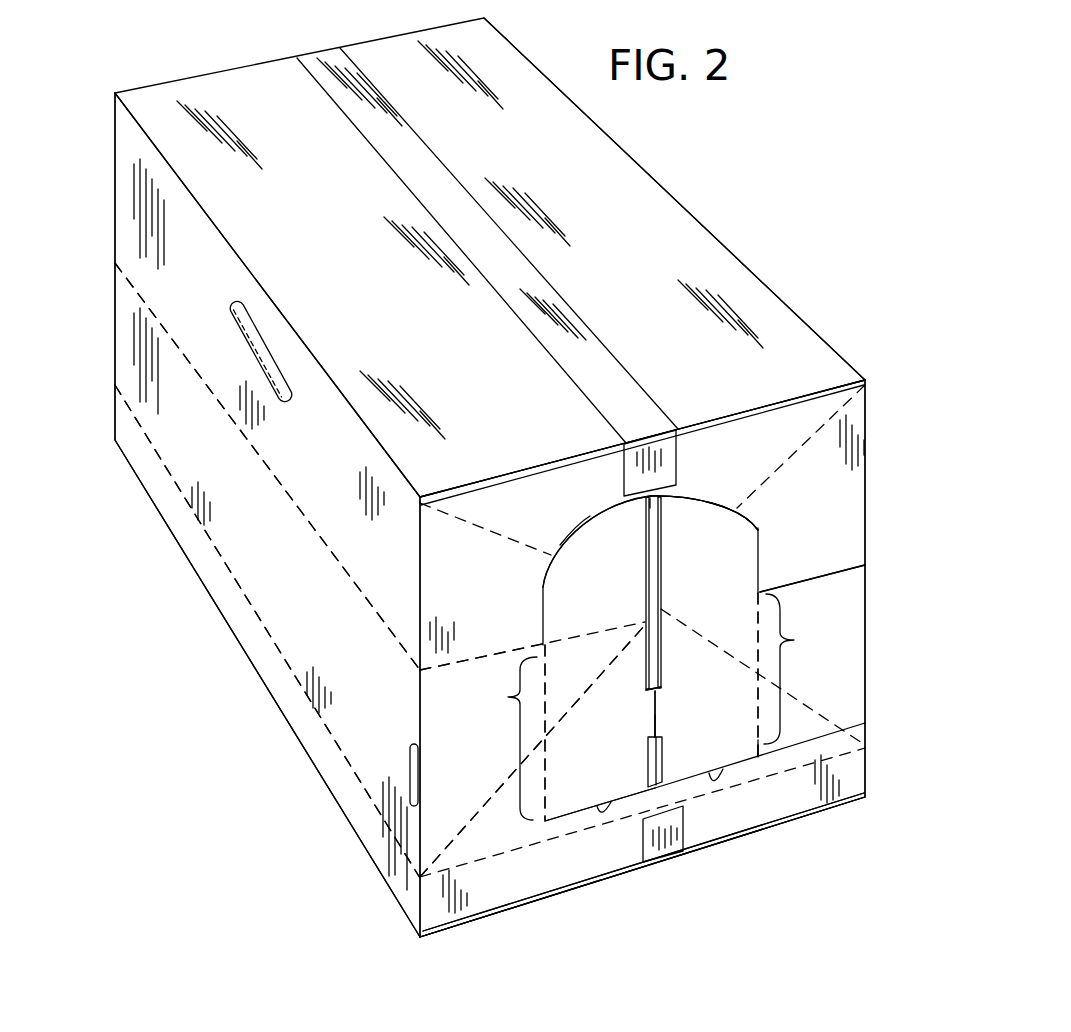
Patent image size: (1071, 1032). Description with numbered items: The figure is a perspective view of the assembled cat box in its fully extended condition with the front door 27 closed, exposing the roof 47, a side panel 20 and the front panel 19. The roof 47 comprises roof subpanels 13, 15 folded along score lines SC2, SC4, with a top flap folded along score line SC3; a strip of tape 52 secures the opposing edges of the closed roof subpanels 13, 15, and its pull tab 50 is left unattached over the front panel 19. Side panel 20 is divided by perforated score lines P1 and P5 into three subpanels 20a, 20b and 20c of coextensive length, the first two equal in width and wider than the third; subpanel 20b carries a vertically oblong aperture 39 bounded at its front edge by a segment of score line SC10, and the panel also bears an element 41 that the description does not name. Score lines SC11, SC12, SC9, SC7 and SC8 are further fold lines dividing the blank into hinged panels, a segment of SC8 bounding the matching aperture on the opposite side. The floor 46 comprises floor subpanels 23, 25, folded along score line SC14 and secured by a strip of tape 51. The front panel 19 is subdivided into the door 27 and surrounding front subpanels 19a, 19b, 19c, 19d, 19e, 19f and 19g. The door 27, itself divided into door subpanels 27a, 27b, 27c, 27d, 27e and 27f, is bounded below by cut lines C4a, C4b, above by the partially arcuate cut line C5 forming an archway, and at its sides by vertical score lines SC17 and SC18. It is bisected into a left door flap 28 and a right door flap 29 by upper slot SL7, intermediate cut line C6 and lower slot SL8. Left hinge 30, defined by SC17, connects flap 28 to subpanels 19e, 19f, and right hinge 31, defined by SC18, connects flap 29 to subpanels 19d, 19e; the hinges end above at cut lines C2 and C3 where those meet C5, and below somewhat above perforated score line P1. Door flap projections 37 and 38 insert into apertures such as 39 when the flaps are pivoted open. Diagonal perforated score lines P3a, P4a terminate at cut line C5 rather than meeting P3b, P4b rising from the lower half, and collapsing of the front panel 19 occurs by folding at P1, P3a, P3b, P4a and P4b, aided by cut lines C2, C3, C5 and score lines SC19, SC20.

The roof 47 is at (245, 99).
The score line SC2 is at (213, 222).
The score line SC11 is at (115, 187).
The score line SC12 is at (115, 337).
The score line SC4 is at (702, 222).
The side panel 20 is at (214, 302).
The side panel subpanel 20a is at (343, 480).
The side panel subpanel 20b is at (285, 535).
The side panel subpanel 20c is at (227, 600).
The perforated score line P5 is at (350, 585).
The perforated score line P1 is at (277, 655).
The handle opening 41 is at (253, 360).
The score line SC14 is at (333, 793).
The score line SC9 is at (418, 585).
The score line SC10 is at (420, 702).
The aperture 39 is at (410, 767).
The roof subpanel 13 is at (400, 302).
The roof subpanel 15 is at (640, 262).
The strip of tape 52 is at (623, 390).
The front panel 19 is at (608, 490).
The score line SC3 is at (481, 488).
The score line SC7 is at (865, 494).
The score line SC8 is at (865, 630).
The pull tab 50 is at (668, 462).
The upper slot SL7 is at (650, 508).
The perforated score line P3a is at (470, 517).
The perforated score line P4a is at (775, 465).
The front subpanel 19a is at (488, 565).
The front subpanel 19b is at (748, 485).
The front subpanel 19c is at (843, 498).
The front subpanel 19d is at (848, 619).
The cut line C3 is at (813, 573).
The front subpanel 19e is at (517, 842).
The front subpanel 19f is at (470, 795).
The front subpanel 19g is at (545, 888).
The perforated score line P4b is at (497, 790).
The perforated score line P3b is at (822, 712).
The cut line C2 is at (483, 656).
The door 27 is at (583, 519).
The door subpanel 27a is at (633, 562).
The cut line C5 is at (578, 537).
The door subpanel 27b is at (722, 535).
The door subpanel 27f is at (573, 635).
The score line SC17 is at (555, 707).
The door subpanel 27c is at (747, 603).
The score line SC18 is at (750, 657).
The score line SC19 is at (600, 628).
The score line SC20 is at (698, 607).
The door subpanel 27d is at (713, 677).
The door subpanel 27e is at (638, 752).
The door flap projection 38 is at (663, 710).
The door flap projection 37 is at (648, 712).
The intermediate cut line C6 is at (660, 725).
The lower slot SL8 is at (658, 770).
The left hinge 30 is at (503, 738).
The right hinge 31 is at (801, 669).
The left door flap 28 is at (584, 814).
The cut line C4a is at (604, 810).
The cut line C4b is at (712, 778).
The strip of tape 51 is at (663, 833).
The floor 46 is at (717, 865).
The floor subpanel 25 is at (780, 823).
The right door flap 29 is at (759, 766).
The floor subpanel 23 is at (562, 905).